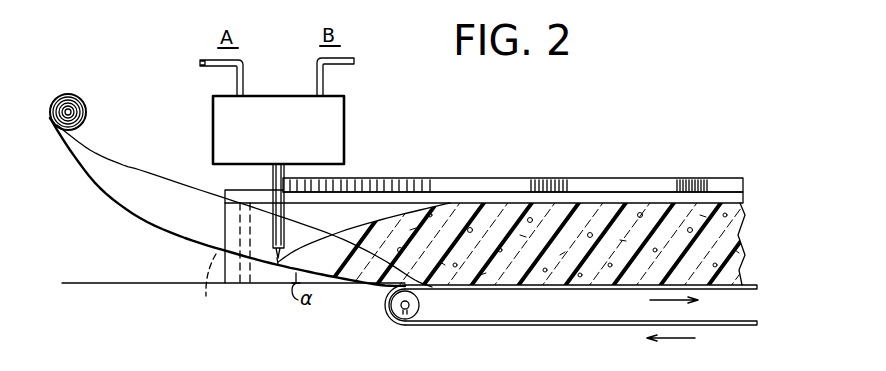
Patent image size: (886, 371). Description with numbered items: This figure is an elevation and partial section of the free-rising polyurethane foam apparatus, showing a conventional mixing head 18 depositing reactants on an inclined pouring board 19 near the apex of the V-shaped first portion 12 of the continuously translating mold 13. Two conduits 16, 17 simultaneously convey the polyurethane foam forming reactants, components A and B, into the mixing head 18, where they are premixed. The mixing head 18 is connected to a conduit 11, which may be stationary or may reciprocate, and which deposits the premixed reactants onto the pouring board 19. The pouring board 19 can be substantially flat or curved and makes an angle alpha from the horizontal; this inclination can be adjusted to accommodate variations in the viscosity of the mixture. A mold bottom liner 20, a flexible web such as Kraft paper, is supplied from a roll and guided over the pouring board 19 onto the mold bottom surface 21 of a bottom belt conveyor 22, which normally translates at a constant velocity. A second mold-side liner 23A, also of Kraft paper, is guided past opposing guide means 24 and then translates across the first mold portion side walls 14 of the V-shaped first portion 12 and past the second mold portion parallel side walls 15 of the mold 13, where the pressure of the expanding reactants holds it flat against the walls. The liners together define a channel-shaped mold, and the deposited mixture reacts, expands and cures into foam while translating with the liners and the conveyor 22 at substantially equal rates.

The conduit 11 is at (288, 213).
The V-shaped first portion of the mold 12 is at (391, 262).
The continuously translating mold 13 is at (582, 261).
The first mold portion side walls 14 is at (388, 180).
The second mold portion parallel side walls 15 is at (624, 178).
The conduit 16 is at (202, 60).
The conduit 17 is at (354, 61).
The mixing head 18 is at (212, 114).
The pouring board 19 is at (263, 283).
The mold bottom liner 20 is at (125, 166).
The mold bottom surface 21 is at (733, 323).
The bottom belt conveyor 22 is at (378, 306).
The second mold-side liner 23A is at (225, 189).
The guide means 24 is at (207, 284).